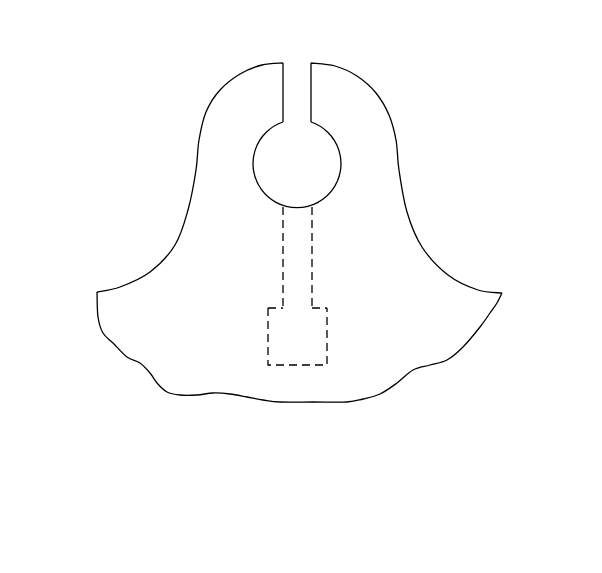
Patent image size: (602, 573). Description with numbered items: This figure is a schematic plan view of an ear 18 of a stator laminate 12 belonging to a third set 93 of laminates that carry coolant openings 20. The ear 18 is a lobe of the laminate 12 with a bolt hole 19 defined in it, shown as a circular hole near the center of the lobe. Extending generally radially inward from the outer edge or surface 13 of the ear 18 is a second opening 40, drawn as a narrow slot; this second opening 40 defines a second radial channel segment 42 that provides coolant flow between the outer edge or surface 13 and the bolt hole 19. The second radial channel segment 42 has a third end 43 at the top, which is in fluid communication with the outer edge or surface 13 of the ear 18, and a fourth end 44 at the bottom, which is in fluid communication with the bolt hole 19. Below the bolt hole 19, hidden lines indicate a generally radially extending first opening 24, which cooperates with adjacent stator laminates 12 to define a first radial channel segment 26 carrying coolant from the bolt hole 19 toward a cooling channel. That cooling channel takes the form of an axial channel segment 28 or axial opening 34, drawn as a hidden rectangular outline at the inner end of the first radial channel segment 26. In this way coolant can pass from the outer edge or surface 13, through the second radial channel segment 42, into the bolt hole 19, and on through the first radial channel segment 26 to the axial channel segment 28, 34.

The coolant opening 20 is at (292, 243).
The third set of stator laminates 93 is at (172, 62).
The outer edge or surface of the ear 13 is at (268, 62).
The third end of second radial channel segment 43 is at (297, 62).
The ear 18 is at (362, 115).
The second opening 40 is at (249, 62).
The second radial channel segment 42 is at (300, 98).
The fourth end of second radial channel segment 44 is at (300, 120).
The bolt hole 19 is at (338, 143).
The first opening 24 is at (409, 248).
The first radial channel segment 26 is at (300, 237).
The axial channel segment 28 is at (417, 299).
The axial opening 34 is at (318, 320).
The stator laminate 12 is at (221, 334).